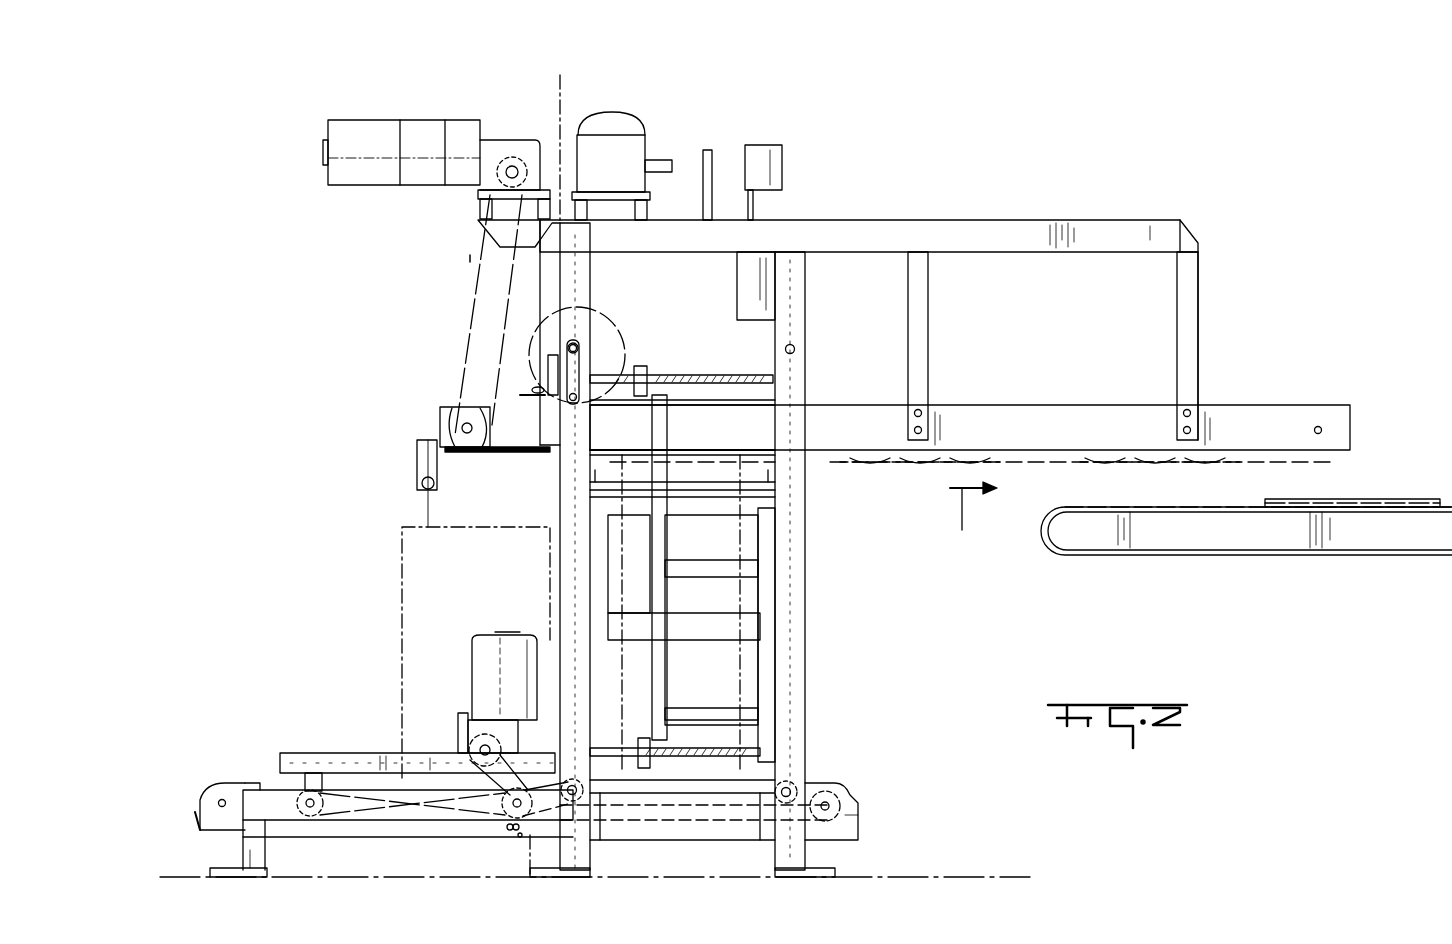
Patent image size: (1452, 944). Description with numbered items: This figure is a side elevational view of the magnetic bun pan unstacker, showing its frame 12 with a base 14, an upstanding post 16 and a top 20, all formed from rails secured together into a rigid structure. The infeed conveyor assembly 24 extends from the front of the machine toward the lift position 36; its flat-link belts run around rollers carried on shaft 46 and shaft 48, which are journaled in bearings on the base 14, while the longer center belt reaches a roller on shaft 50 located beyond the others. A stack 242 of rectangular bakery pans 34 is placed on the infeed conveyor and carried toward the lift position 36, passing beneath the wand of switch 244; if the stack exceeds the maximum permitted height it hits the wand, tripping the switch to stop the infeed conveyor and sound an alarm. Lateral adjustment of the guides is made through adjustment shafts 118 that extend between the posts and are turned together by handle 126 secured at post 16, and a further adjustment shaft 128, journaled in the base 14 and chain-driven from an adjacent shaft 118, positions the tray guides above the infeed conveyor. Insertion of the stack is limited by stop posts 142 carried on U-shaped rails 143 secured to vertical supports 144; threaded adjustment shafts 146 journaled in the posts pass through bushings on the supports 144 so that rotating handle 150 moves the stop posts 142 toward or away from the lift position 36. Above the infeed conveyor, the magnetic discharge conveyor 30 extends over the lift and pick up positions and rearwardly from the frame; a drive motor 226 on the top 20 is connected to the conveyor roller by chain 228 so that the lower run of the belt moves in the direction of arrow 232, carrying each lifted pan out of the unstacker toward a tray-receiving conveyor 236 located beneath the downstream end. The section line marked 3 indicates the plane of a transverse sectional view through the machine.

The section line 3- 3 is at (555, 90).
The frame 12 is at (810, 640).
The base 14 is at (247, 811).
The right post 16 is at (782, 278).
The top 20 is at (790, 230).
The infeed conveyor assembly 24 is at (322, 750).
The magnetic discharge conveyor 30 is at (1062, 405).
The bakery pans 34 is at (1268, 502).
The lift position 36 is at (720, 692).
The shaft 46 is at (220, 798).
The shaft 48 is at (510, 805).
The shaft 50 is at (835, 806).
The adjustment shafts 118 is at (577, 345).
The handle 126 is at (577, 376).
The adjustment shaft 128 is at (310, 808).
The stop posts 142 is at (768, 540).
The U-shaped rails 143 is at (692, 570).
The vertical supports 144 is at (656, 540).
The threaded adjustment shafts 146 is at (717, 375).
The handle 150 is at (572, 395).
The drive motor 226 is at (368, 140).
The chain 228 is at (478, 275).
The arrow 232 is at (971, 521).
The tray-receiving conveyor 236 is at (1094, 540).
The stack 242 is at (400, 560).
The switch 244 is at (437, 468).